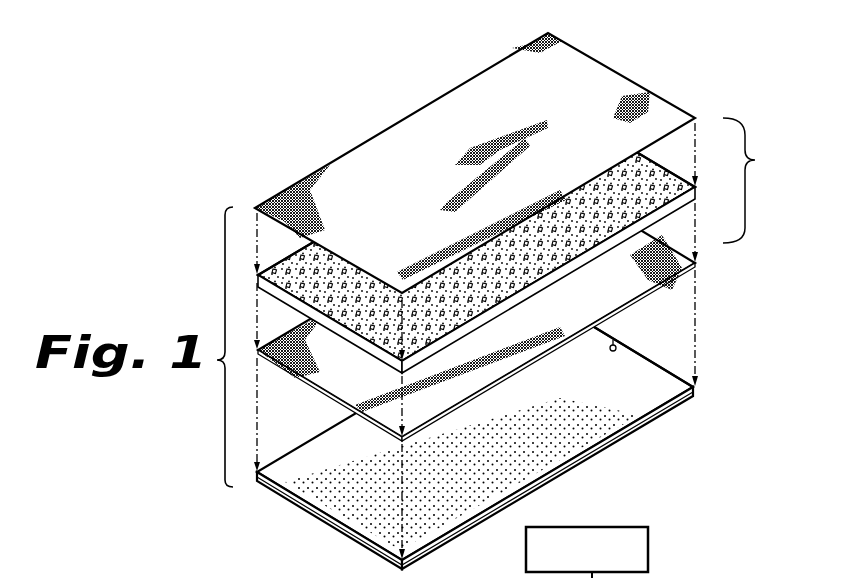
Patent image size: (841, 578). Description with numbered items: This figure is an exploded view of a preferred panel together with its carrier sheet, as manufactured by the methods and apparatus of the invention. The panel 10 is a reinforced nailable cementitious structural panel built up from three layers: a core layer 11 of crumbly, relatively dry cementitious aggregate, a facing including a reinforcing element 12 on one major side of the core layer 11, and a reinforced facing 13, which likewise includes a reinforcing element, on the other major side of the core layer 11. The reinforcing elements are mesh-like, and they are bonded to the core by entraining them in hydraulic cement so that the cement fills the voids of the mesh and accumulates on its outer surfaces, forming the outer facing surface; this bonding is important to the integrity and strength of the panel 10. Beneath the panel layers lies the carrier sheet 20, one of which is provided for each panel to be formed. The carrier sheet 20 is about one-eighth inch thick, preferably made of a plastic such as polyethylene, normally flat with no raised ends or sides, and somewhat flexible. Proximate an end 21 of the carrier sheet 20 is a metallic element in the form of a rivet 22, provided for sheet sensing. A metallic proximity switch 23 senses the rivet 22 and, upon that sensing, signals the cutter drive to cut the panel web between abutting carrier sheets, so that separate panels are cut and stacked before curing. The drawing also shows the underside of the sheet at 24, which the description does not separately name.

The panel 10 is at (758, 160).
The core layer 11 is at (699, 190).
The reinforcing element 12 is at (698, 263).
The reinforced facing 13 is at (698, 118).
The carrier sheet 20 is at (475, 434).
The end 21 is at (652, 360).
The rivet 22 is at (615, 345).
The proximity switch 23 is at (650, 548).
The base plate underside 24 is at (336, 524).